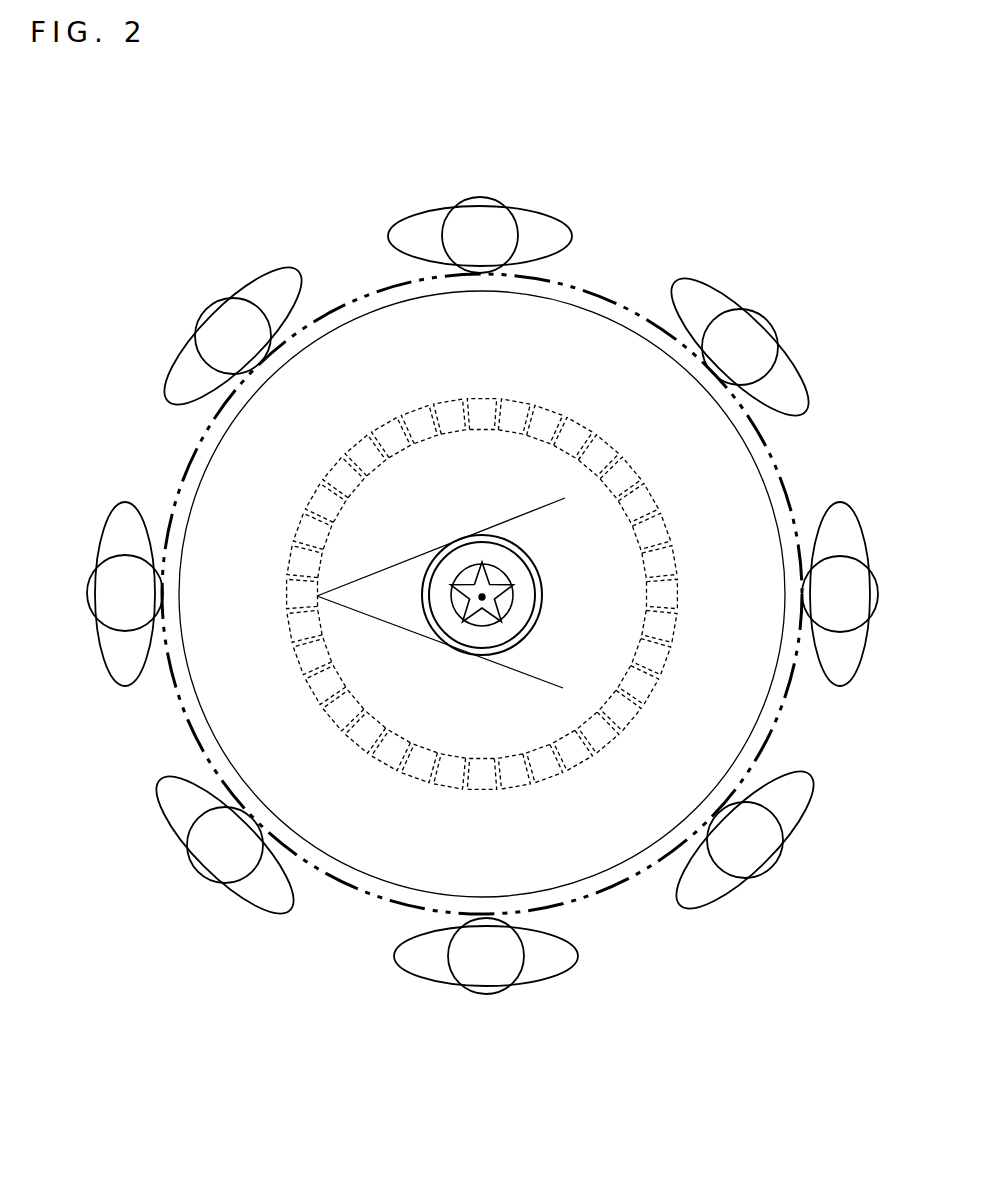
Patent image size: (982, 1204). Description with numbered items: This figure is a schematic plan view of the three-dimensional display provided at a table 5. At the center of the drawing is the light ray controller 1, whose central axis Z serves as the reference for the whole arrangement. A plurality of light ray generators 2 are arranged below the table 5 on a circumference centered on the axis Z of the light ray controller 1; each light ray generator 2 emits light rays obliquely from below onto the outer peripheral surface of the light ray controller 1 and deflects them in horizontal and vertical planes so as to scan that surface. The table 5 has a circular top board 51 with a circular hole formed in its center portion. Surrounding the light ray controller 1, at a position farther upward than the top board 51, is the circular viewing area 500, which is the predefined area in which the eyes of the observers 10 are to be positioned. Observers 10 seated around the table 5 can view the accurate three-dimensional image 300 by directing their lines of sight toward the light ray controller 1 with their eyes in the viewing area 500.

The light ray controller 1 is at (527, 555).
The light ray generators 2 is at (568, 428).
The table 5 is at (577, 350).
The observer 10 is at (460, 203).
The top board 51 is at (387, 367).
The three-dimensional image 300 is at (500, 600).
The viewing area 500 is at (588, 288).
The axis Z is at (481, 594).